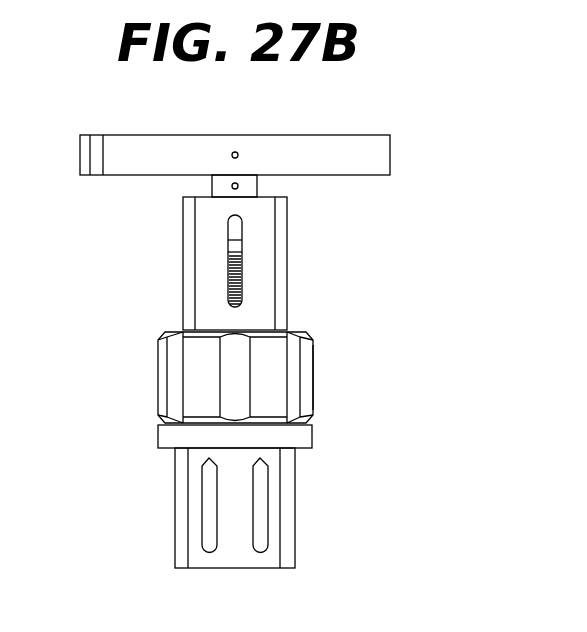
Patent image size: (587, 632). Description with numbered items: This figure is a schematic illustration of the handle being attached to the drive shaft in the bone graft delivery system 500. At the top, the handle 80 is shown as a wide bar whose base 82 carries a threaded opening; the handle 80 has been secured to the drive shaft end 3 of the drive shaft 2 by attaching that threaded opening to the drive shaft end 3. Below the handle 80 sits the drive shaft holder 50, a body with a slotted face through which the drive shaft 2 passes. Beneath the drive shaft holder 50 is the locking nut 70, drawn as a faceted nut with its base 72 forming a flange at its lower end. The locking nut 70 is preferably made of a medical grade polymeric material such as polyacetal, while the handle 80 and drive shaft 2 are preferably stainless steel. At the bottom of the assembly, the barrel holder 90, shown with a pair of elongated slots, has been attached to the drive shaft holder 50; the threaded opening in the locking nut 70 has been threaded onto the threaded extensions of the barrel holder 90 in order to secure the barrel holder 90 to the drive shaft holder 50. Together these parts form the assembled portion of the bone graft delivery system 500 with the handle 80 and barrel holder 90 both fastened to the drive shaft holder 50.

The bone graft delivery system 500 is at (404, 314).
The handle 80 is at (390, 157).
The base 82 is at (258, 126).
The drive shaft 2 is at (186, 187).
The drive shaft end 3 is at (296, 185).
The drive shaft holder 50 is at (187, 270).
The locking nut 70 is at (140, 378).
The base 72 is at (312, 397).
The barrel holder 90 is at (295, 503).